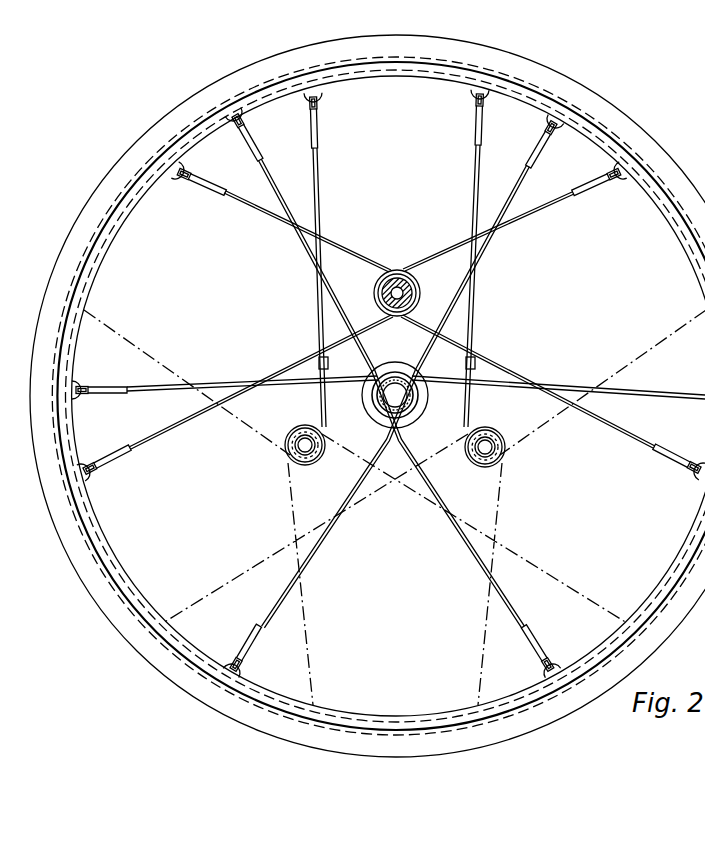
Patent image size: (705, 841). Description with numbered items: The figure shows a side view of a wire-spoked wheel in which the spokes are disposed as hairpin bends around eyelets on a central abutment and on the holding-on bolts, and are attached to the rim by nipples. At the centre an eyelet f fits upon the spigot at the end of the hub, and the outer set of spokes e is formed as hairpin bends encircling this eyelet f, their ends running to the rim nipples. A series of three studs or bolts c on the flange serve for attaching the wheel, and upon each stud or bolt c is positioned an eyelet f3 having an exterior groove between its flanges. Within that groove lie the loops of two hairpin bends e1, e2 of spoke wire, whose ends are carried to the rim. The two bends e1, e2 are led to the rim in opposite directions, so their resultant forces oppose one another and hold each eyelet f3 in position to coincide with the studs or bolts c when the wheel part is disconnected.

The studs or bolts c is at (397, 277).
The outer set of spokes e is at (352, 377).
The hairpin bend of spoke wire e1 is at (377, 320).
The hairpin bend of spoke wire e2 is at (430, 332).
The eyelet f is at (417, 406).
The eyelet f3 is at (412, 293).